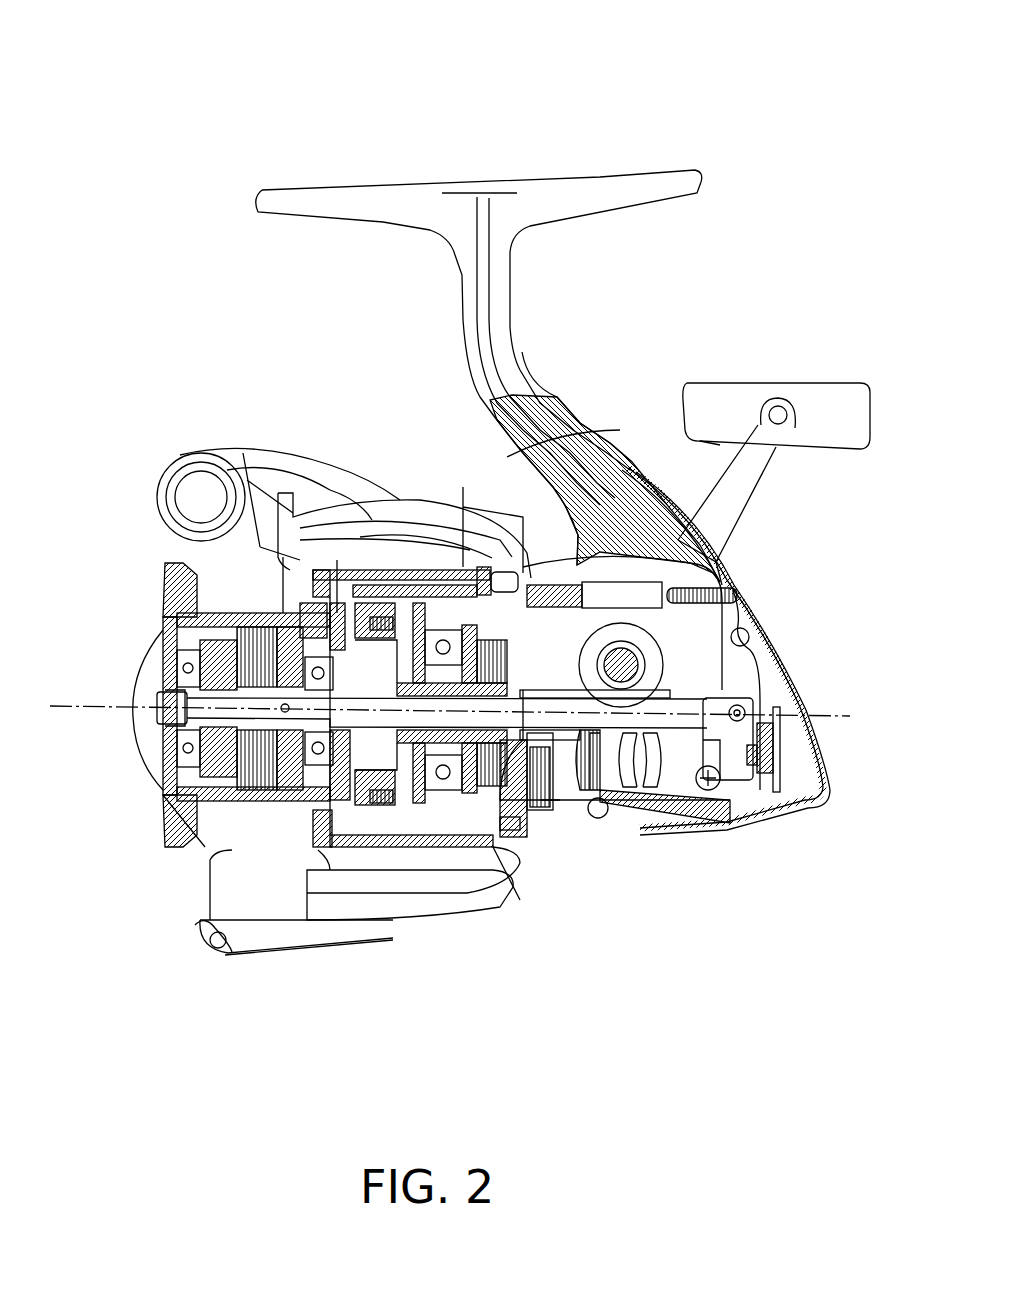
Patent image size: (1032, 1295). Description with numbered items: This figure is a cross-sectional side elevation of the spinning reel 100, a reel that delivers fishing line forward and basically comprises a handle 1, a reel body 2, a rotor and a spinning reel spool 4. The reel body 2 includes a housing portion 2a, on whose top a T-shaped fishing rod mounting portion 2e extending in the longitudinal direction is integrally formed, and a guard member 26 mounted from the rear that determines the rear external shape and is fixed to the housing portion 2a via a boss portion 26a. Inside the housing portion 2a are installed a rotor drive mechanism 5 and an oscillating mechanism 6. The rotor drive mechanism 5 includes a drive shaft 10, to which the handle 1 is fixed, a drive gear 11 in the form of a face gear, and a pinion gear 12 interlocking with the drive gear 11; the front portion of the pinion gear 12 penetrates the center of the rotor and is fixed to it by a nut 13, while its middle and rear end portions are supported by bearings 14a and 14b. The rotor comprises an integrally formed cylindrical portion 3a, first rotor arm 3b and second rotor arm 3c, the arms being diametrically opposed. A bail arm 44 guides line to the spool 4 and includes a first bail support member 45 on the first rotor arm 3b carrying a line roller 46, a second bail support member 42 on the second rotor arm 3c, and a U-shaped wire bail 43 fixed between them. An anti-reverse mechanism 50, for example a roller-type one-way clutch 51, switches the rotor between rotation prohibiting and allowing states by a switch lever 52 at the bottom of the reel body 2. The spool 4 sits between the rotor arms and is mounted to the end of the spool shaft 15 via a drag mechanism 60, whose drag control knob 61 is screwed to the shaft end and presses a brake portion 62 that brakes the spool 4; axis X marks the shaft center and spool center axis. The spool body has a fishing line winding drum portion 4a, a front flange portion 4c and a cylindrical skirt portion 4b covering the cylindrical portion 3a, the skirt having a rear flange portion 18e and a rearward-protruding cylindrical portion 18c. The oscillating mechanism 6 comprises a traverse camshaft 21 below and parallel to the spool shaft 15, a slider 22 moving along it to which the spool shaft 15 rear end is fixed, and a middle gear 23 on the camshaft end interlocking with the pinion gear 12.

The spinning reel 100 is at (530, 122).
The handle 1 is at (815, 383).
The reel body 2 is at (590, 330).
The housing portion 2a is at (716, 552).
The T-shaped fishing rod mounting portion 2e is at (528, 365).
The cylindrical portion 3a is at (367, 555).
The first rotor arm 3b is at (400, 520).
The second rotor arm 3c is at (337, 887).
The spinning reel spool 4 is at (232, 802).
The fishing line winding drum portion 4a is at (260, 613).
The skirt portion 4b is at (312, 865).
The front flange portion 4c is at (175, 567).
The rotor drive mechanism 5 is at (722, 462).
The oscillating mechanism 6 is at (690, 790).
The drive shaft 10 is at (630, 637).
The drive gear 11 is at (650, 470).
The pinion gear 12 is at (437, 597).
The nut 13 is at (300, 813).
The bearing 14a is at (470, 847).
The bearing 14b is at (598, 818).
The spool shaft 15 is at (163, 790).
The cylindrical portion 18c is at (337, 560).
The rear flange portion 18e is at (287, 553).
The traverse camshaft 21 is at (670, 767).
The slider 22 is at (735, 760).
The middle gear 23 is at (520, 850).
The guard member 26 is at (772, 640).
The boss portion 26a is at (730, 567).
The second bail support member 42 is at (253, 953).
The bail 43 is at (193, 933).
The bail arm 44 is at (150, 397).
The first bail support member 45 is at (250, 443).
The line roller 46 is at (190, 487).
The anti-reverse mechanism 50 is at (433, 823).
The roller-type one-way clutch 51 is at (405, 823).
The switch lever 52 is at (572, 830).
The drag mechanism 60 is at (155, 740).
The drag control knob 61 is at (163, 633).
The brake portion 62 is at (205, 847).
The longitudinal axis X is at (113, 700).